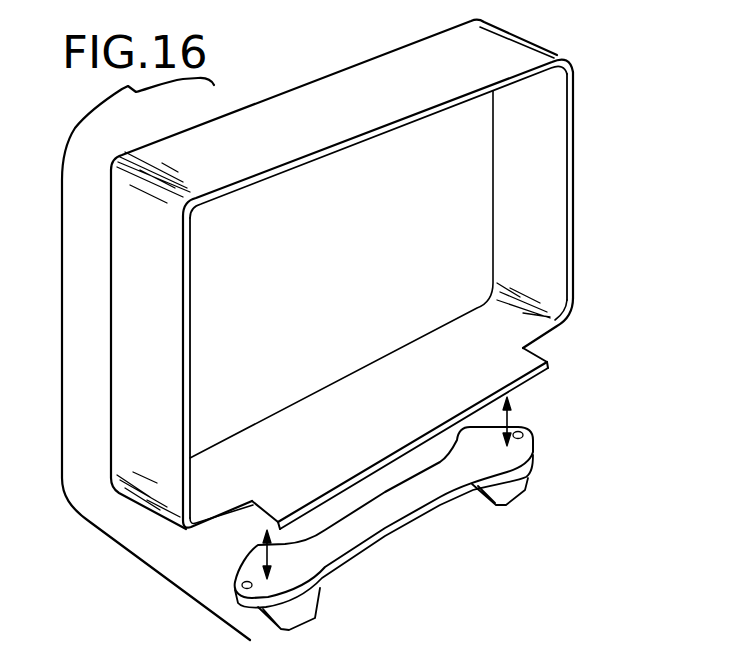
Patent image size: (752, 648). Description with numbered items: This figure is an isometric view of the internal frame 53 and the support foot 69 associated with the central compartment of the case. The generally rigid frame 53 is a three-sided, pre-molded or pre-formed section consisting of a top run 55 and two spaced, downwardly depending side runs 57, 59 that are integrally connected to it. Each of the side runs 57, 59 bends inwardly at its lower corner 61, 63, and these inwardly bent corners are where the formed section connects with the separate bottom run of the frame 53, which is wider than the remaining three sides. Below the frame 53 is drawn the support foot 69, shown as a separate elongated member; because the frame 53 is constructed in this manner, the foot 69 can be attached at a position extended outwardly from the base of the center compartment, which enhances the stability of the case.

The frame 53 is at (177, 375).
The top run 55 is at (350, 124).
The side run 57 is at (170, 286).
The side run 59 is at (550, 146).
The lower corner 61 is at (200, 531).
The lower corner 63 is at (562, 311).
The support foot 69 is at (405, 521).